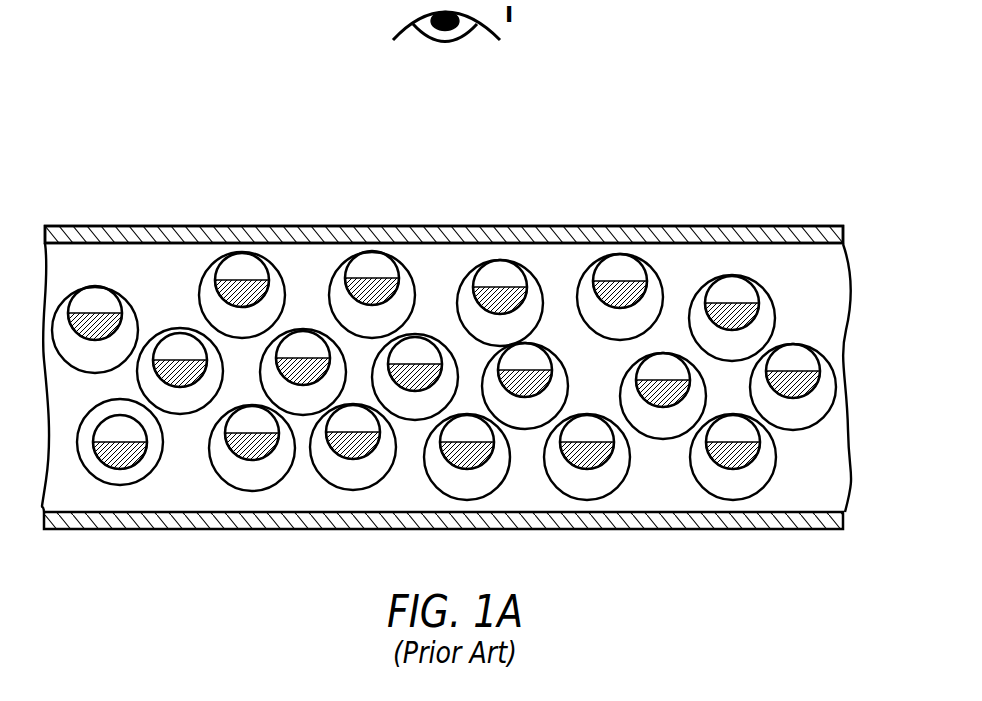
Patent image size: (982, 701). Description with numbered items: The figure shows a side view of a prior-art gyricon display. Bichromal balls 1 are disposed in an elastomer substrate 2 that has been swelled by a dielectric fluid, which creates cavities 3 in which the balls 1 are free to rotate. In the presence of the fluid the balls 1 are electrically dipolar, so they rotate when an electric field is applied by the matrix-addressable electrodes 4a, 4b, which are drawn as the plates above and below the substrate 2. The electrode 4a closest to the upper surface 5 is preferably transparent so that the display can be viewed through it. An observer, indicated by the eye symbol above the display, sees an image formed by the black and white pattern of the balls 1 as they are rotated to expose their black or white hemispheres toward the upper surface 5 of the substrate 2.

The bichromal balls 1 is at (593, 263).
The elastomer substrate 2 is at (818, 328).
The cavities 3 is at (652, 302).
The electrode 4a is at (845, 237).
The electrode 4b is at (843, 522).
The upper surface 5 is at (280, 214).